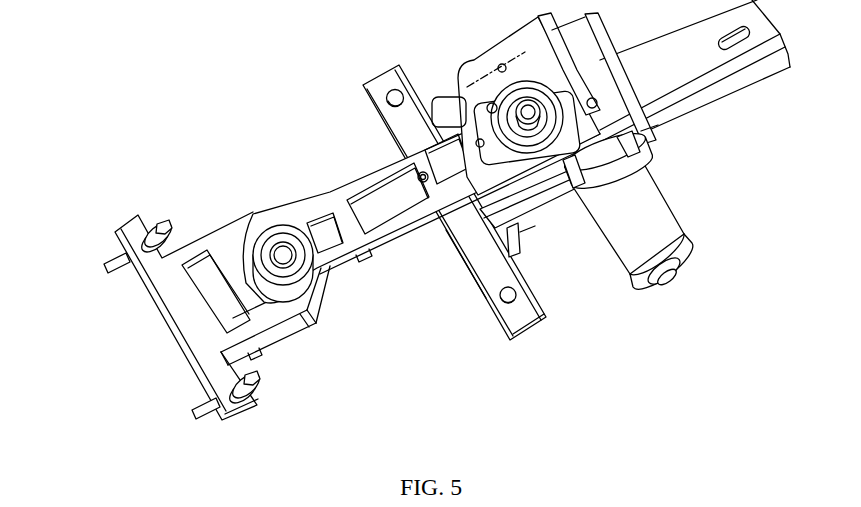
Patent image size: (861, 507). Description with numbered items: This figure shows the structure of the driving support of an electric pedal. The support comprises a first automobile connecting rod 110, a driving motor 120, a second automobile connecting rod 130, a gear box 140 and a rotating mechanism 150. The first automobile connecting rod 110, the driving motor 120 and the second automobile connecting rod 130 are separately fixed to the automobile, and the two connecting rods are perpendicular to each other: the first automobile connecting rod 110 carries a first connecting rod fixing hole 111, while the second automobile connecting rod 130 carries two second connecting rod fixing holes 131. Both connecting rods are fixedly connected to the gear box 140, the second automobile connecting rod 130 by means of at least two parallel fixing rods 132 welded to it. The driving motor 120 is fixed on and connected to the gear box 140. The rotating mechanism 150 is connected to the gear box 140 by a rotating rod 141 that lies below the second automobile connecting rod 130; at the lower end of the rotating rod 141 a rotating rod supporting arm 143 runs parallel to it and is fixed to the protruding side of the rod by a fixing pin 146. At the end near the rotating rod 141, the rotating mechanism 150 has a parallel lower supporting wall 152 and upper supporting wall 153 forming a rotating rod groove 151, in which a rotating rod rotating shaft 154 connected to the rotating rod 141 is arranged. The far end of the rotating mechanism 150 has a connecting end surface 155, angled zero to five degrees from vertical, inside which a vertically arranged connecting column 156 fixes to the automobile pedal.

The first automobile connecting rod 110 is at (712, 87).
The first connecting rod fixing hole 111 is at (744, 34).
The driving motor 120 is at (635, 203).
The second automobile connecting rod 130 is at (395, 123).
The second connecting rod fixing hole 131 is at (388, 96).
The fixing rod 132 is at (477, 60).
The gear box 140 is at (602, 127).
The rotating rod 141 is at (317, 207).
The rotating rod supporting arm 143 is at (487, 213).
The fixing pin 146 is at (514, 236).
The rotating mechanism 150 is at (195, 314).
The rotating rod groove 151 is at (283, 331).
The lower supporting wall 152 is at (313, 329).
The upper supporting wall 153 is at (318, 300).
The rotating rod rotating shaft 154 is at (271, 243).
The connecting end surface 155 is at (117, 239).
The connecting column 156 is at (157, 222).